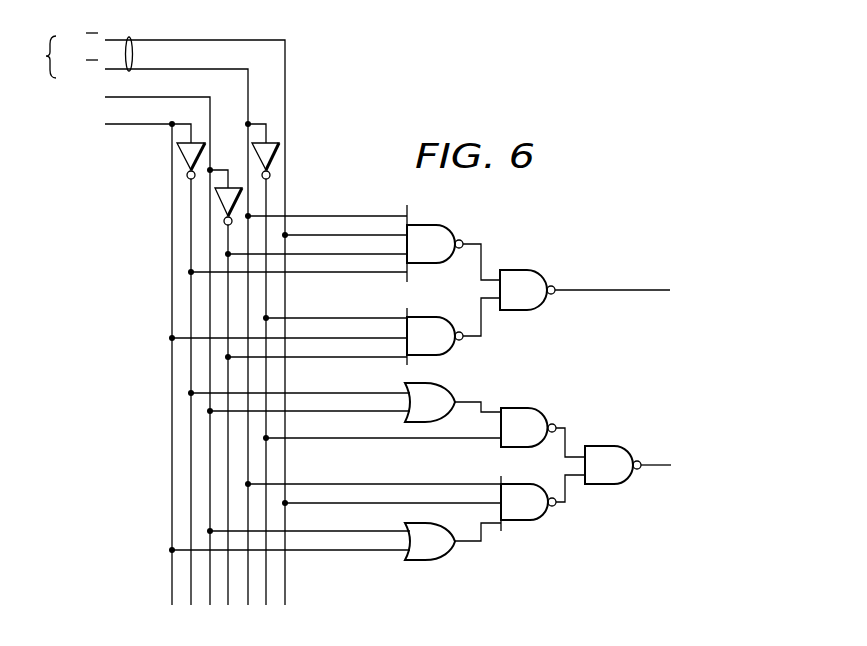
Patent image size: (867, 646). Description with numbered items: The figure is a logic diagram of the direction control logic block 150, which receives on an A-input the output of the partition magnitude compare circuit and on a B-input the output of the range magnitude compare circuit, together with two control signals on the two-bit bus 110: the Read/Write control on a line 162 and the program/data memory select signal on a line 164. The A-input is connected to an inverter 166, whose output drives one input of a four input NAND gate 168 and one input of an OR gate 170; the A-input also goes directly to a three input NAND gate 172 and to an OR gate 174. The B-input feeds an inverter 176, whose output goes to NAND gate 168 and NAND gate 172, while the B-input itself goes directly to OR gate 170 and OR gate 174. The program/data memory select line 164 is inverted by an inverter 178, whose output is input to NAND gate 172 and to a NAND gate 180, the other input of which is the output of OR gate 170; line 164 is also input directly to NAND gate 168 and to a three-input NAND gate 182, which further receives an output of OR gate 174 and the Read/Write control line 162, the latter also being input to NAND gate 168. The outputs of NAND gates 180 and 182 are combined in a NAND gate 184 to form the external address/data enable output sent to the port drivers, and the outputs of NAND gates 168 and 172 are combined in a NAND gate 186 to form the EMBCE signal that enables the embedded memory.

The two-bit bus 110 is at (129, 37).
The direction control logic block 150 is at (628, 193).
The Read/Write control line 162 is at (285, 58).
The program/data memory select line 164 is at (248, 88).
The inverter 166 is at (178, 150).
The four input NAND gate 168 is at (445, 224).
The OR gate 170 is at (440, 384).
The three input NAND gate 172 is at (430, 317).
The OR gate 174 is at (445, 560).
The inverter 176 is at (218, 198).
The inverter 178 is at (279, 152).
The NAND gate 180 is at (531, 408).
The three-input NAND gate 182 is at (545, 521).
The NAND gate 184 is at (617, 446).
The NAND gate 186 is at (520, 270).